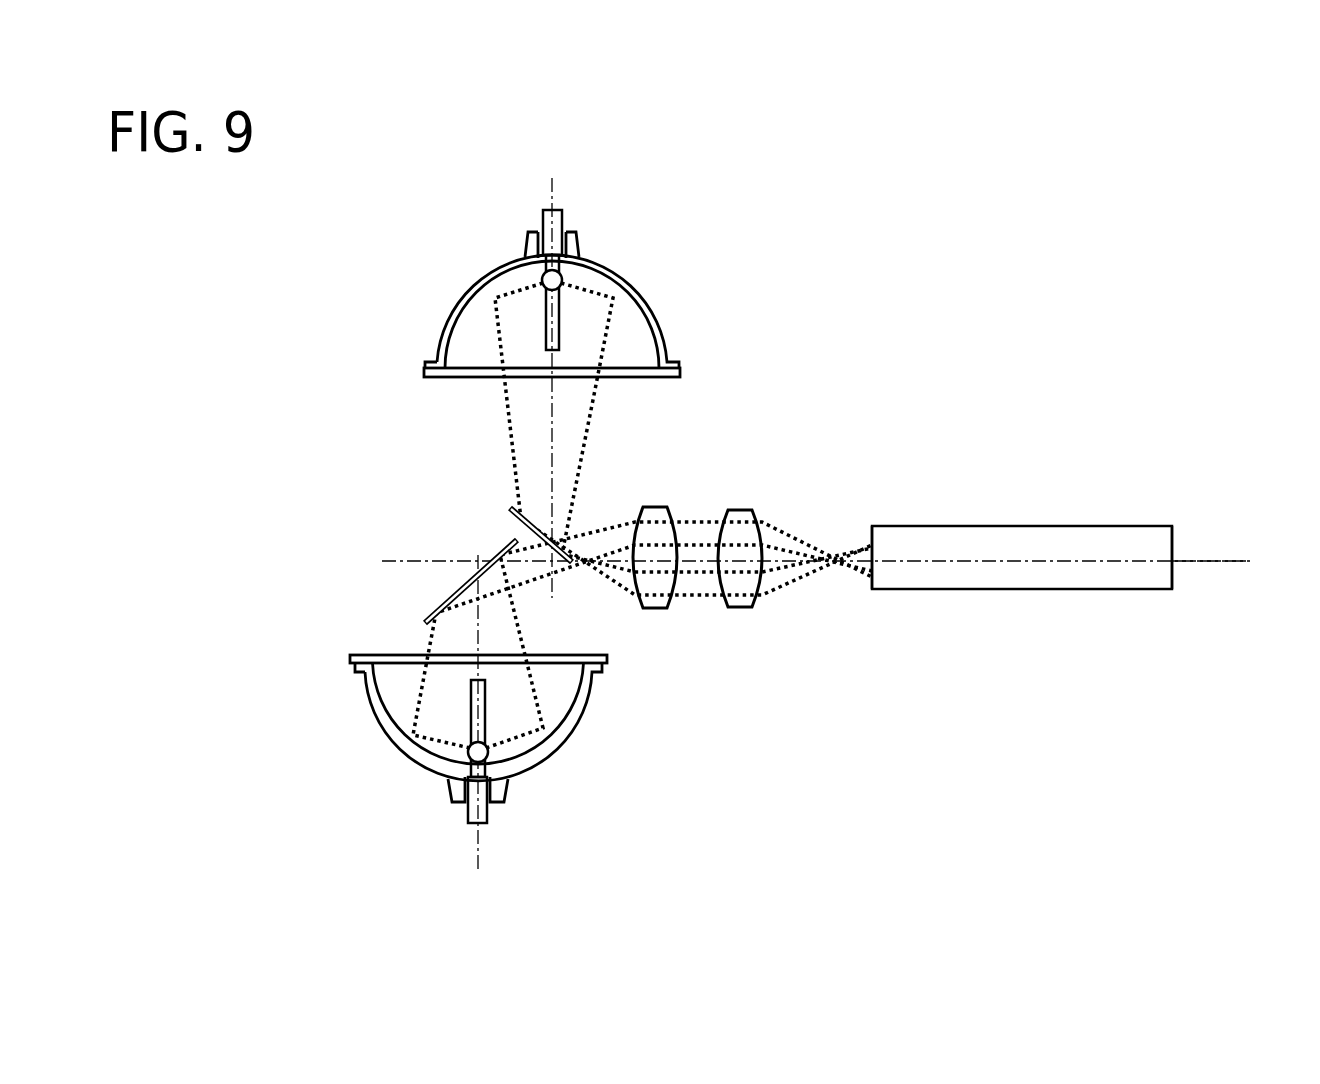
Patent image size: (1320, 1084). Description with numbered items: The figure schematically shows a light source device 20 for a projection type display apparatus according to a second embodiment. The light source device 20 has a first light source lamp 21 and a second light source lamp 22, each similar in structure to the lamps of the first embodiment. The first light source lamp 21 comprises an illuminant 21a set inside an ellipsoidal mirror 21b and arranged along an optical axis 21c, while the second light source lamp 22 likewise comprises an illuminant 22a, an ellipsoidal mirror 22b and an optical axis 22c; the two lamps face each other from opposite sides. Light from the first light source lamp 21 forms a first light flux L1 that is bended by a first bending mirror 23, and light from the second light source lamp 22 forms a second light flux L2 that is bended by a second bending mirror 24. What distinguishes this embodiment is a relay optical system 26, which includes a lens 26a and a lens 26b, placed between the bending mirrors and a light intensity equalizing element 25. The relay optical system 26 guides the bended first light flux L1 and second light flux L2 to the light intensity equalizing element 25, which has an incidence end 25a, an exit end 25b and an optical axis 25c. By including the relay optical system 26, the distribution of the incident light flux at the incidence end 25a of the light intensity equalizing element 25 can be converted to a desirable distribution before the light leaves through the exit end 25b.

The light source device 20 is at (292, 165).
The first light source lamp 21 is at (340, 200).
The illuminant 21a is at (540, 280).
The ellipsoidal mirror 21b is at (472, 318).
The optical axis 21c is at (550, 400).
The second light source lamp 22 is at (265, 702).
The illuminant 22a is at (470, 755).
The ellipsoidal mirror 22b is at (400, 742).
The optical axis 22c is at (478, 853).
The first bending mirror 23 is at (517, 535).
The second bending mirror 24 is at (443, 608).
The light intensity equalizing element 25 is at (1046, 526).
The incidence end 25a is at (872, 582).
The exit end 25b is at (1172, 582).
The optical axis 25c is at (1207, 556).
The relay optical system 26 is at (783, 695).
The lens 26a is at (655, 608).
The lens 26b is at (740, 608).
The first light flux L1 is at (515, 443).
The second light flux L2 is at (430, 648).